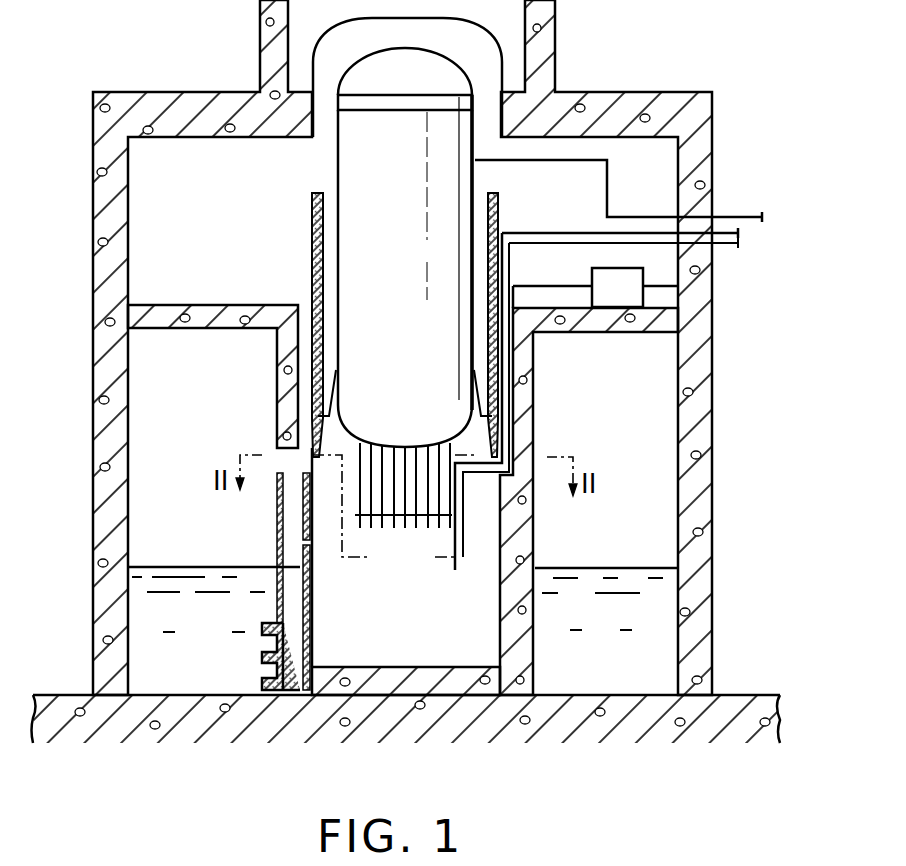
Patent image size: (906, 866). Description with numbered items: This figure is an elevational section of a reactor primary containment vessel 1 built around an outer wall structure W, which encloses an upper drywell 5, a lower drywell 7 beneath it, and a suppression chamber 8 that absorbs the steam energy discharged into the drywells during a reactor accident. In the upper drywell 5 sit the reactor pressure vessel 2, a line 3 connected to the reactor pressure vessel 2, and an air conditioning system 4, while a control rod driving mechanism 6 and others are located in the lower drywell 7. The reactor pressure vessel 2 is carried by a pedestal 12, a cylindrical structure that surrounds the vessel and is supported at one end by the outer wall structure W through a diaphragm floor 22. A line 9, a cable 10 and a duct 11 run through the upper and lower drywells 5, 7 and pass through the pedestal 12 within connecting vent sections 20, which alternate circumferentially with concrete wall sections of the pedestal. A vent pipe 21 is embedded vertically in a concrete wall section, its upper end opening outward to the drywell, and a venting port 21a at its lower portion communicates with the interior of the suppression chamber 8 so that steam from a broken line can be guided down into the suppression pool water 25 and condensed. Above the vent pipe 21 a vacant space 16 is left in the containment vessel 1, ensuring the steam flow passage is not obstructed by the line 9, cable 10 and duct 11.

The reactor primary containment vessel 1 is at (614, 90).
The reactor pressure vessel 2 is at (336, 155).
The line 3 is at (660, 217).
The air conditioning system 4 is at (688, 285).
The upper drywell 5 is at (133, 200).
The control rod driving mechanism 6 is at (358, 485).
The lower drywell 7 is at (441, 647).
The suppression chamber 8 is at (660, 416).
The line 9 is at (558, 232).
The cable 10 is at (653, 243).
The duct 11 is at (550, 286).
The pedestal 12 is at (277, 398).
The vacant space 16 is at (310, 347).
The connecting vent section 20 is at (515, 412).
The vent pipe 21 is at (290, 508).
The venting port 21a is at (262, 680).
The diaphragm floor 22 is at (597, 334).
The suppression pool water 25 is at (617, 656).
The outer wall structure W is at (712, 107).